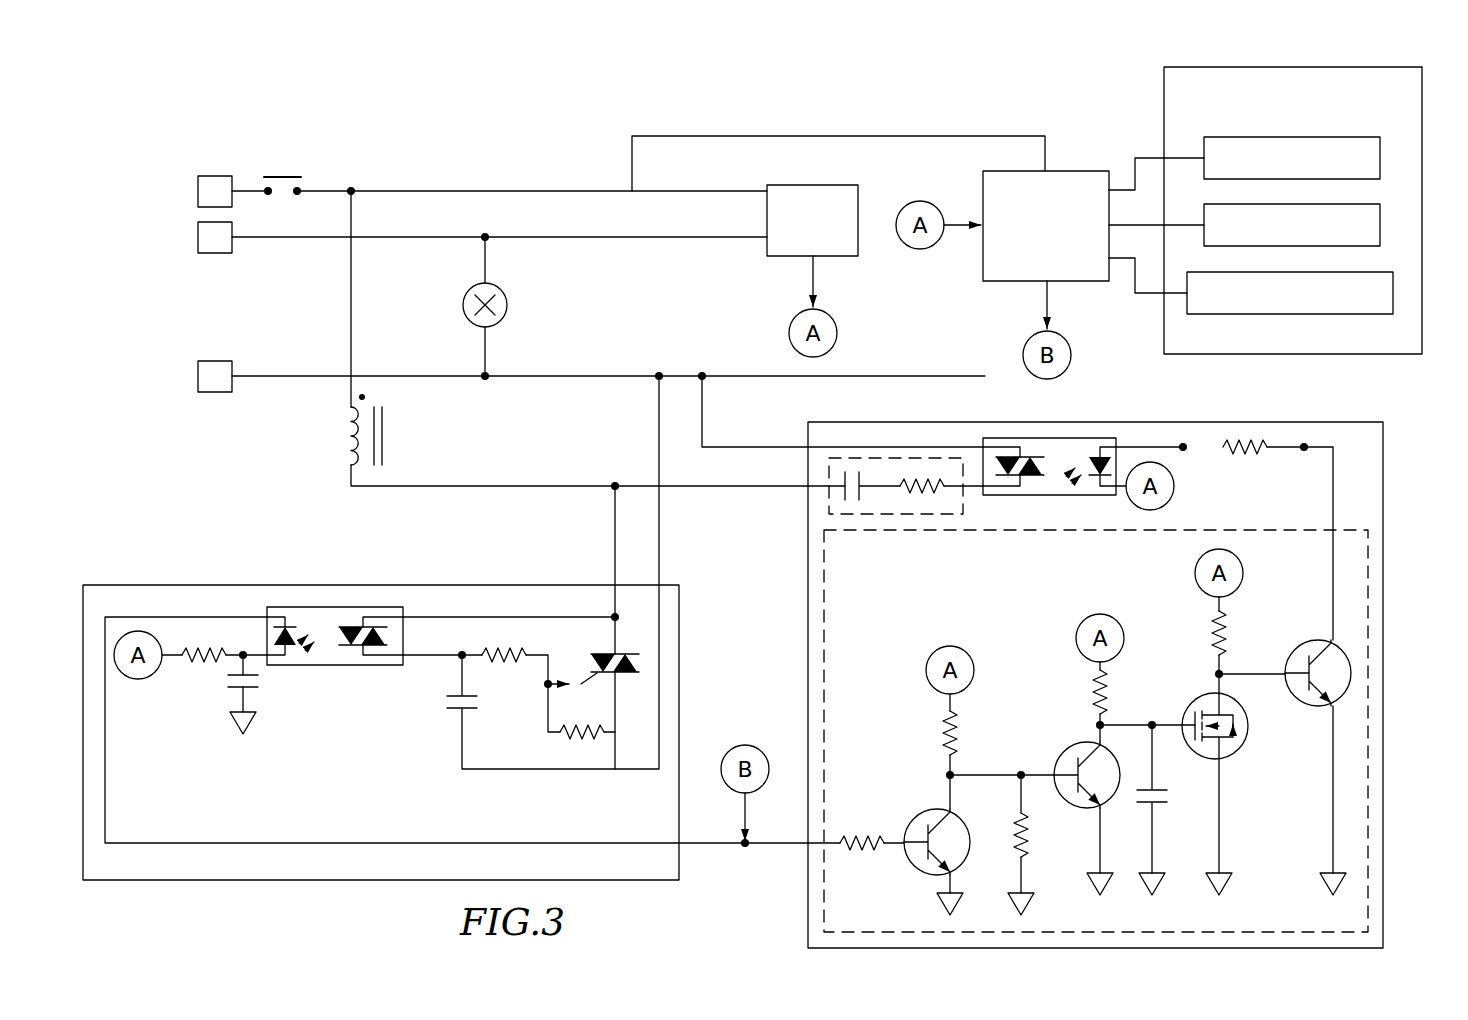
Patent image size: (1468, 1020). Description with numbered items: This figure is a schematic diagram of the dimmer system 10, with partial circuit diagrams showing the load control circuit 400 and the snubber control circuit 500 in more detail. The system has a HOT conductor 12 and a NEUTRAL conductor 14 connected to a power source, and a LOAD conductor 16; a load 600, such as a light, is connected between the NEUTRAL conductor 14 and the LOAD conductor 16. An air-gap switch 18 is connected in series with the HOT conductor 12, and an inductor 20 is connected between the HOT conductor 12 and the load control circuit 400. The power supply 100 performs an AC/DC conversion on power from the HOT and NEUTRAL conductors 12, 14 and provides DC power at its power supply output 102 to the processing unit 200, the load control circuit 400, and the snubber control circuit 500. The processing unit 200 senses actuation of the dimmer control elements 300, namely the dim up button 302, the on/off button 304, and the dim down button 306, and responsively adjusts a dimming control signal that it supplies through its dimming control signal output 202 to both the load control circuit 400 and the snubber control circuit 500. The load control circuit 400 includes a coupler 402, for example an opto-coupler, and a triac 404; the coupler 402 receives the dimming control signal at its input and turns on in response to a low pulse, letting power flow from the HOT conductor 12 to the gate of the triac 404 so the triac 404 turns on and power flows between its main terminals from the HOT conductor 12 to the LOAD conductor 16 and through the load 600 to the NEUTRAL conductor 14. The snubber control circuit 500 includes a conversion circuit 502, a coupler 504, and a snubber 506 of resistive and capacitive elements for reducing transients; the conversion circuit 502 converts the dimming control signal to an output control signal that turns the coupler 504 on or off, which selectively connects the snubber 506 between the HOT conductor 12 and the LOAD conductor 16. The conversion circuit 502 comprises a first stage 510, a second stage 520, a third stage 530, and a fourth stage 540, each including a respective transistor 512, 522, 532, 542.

The dimmer system 10 is at (134, 92).
The HOT conductor 12 is at (323, 190).
The NEUTRAL conductor 14 is at (304, 243).
The LOAD conductor 16 is at (296, 375).
The air-gap switch 18 is at (289, 168).
The inductor 20 is at (397, 430).
The power supply 100 is at (862, 252).
The power supply output 102 is at (790, 327).
The processing unit 200 is at (1073, 171).
The dimming control signal output 202 is at (1030, 334).
The dimmer control elements 300 is at (1164, 82).
The dim up button 302 is at (1381, 147).
The on/off button 304 is at (1219, 204).
The dim down button 306 is at (1340, 314).
The load control circuit 400 is at (478, 585).
The coupler 402 is at (305, 667).
The triac 404 is at (637, 650).
The snubber control circuit 500 is at (808, 870).
The conversion circuit 502 is at (1368, 887).
The coupler 504 is at (1072, 439).
The snubber 506 is at (872, 458).
The first stage 510 is at (981, 754).
The transistor 512 is at (920, 815).
The second stage 520 is at (1130, 698).
The transistor 522 is at (1085, 808).
The third stage 530 is at (1240, 659).
The transistor 532 is at (1241, 753).
The fourth stage 540 is at (1316, 638).
The transistor 542 is at (1293, 702).
The load 600 is at (507, 305).